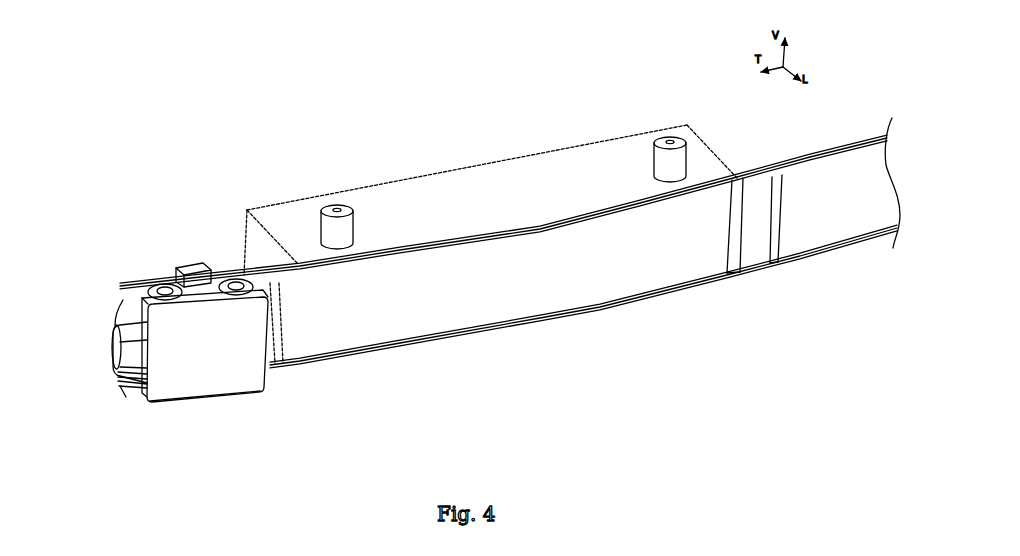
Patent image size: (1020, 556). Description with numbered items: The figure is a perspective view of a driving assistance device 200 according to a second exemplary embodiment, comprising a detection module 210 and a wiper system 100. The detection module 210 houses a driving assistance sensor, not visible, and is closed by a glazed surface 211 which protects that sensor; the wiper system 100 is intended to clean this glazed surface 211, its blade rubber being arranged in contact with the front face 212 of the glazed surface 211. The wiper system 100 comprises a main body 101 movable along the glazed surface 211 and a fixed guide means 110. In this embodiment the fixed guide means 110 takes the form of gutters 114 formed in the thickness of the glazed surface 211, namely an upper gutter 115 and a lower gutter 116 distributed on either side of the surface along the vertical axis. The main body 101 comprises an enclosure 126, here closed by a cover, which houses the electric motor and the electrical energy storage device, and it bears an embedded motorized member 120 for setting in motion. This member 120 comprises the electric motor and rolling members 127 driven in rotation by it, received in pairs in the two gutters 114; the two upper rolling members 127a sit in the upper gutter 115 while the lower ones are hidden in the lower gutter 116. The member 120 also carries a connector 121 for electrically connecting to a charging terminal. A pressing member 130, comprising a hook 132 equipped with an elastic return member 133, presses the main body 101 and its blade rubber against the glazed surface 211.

The driving assistance device 200 is at (330, 69).
The detection module 210 is at (569, 148).
The fixed guide means 110 is at (440, 237).
The gutter 114 is at (503, 212).
The upper gutter 115 is at (503, 212).
The lower gutter 116 is at (631, 306).
The glazed surface 211 is at (465, 313).
The front face 212 is at (521, 295).
The wiper system 100 is at (337, 399).
The main body 101 is at (225, 425).
The enclosure 126 is at (166, 404).
The rolling member 127 is at (163, 277).
The upper rolling member 127a is at (237, 272).
The pressing member 130 is at (195, 259).
The hook 132 is at (193, 275).
The elastic return member 133 is at (193, 275).
The embedded motorized member for setting in motion 120 is at (133, 300).
The connector 121 is at (110, 348).